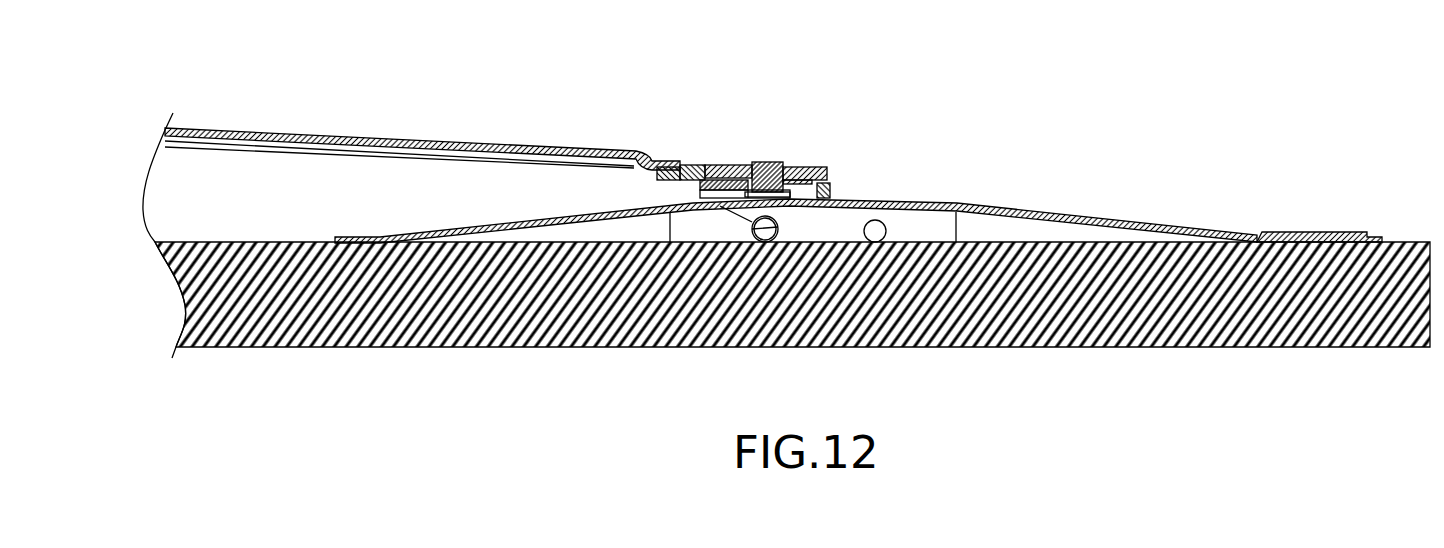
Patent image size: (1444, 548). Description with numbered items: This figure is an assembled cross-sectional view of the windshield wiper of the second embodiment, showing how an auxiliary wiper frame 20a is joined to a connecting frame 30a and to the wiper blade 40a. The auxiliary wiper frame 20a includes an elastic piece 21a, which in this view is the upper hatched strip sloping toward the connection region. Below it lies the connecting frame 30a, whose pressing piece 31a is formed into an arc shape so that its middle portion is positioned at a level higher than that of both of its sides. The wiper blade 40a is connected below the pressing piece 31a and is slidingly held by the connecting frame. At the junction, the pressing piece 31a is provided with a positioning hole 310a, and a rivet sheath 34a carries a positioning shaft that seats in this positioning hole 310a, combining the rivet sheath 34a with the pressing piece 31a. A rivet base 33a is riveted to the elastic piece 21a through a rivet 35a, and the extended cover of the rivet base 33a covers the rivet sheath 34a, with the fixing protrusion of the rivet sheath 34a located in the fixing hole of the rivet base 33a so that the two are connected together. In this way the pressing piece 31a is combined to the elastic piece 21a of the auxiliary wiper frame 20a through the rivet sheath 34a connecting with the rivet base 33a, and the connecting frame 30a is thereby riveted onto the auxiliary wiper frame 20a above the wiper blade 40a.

The auxiliary wiper frame 20a is at (458, 119).
The elastic piece 21a is at (455, 140).
The connecting frame 30a is at (858, 186).
The pressing piece 31a is at (1071, 215).
The rivet base 33a is at (806, 167).
The rivet sheath 34a is at (829, 185).
The rivet 35a is at (770, 162).
The positioning hole 310a is at (720, 180).
The wiper blade 40a is at (985, 322).